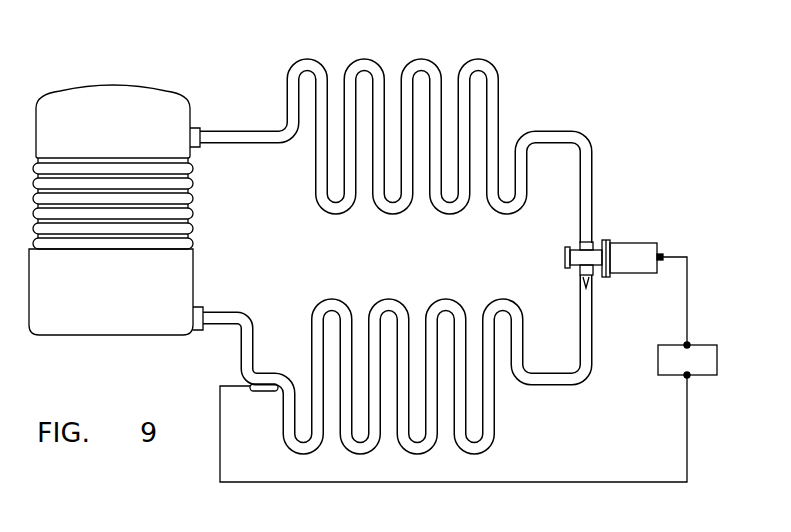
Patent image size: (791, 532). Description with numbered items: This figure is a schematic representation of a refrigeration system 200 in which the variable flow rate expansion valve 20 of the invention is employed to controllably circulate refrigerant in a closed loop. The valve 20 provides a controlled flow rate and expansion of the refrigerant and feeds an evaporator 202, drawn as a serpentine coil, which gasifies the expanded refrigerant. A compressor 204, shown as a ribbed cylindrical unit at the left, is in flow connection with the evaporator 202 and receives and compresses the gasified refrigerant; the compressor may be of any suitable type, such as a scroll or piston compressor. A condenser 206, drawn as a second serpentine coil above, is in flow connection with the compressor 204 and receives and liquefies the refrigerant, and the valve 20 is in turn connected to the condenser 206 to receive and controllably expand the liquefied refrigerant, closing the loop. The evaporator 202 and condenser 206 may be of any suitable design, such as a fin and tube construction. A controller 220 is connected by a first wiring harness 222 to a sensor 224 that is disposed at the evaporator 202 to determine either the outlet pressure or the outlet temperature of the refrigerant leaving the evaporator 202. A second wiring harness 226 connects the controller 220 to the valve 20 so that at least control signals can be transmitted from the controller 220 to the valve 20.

The refrigeration system 200 is at (425, 267).
The evaporator 202 is at (491, 424).
The compressor 204 is at (128, 85).
The condenser 206 is at (382, 62).
The valve 20 is at (625, 248).
The controller 220 is at (673, 366).
The first wiring harness 222 is at (390, 483).
The sensor 224 is at (262, 392).
The second wiring harness 226 is at (688, 282).